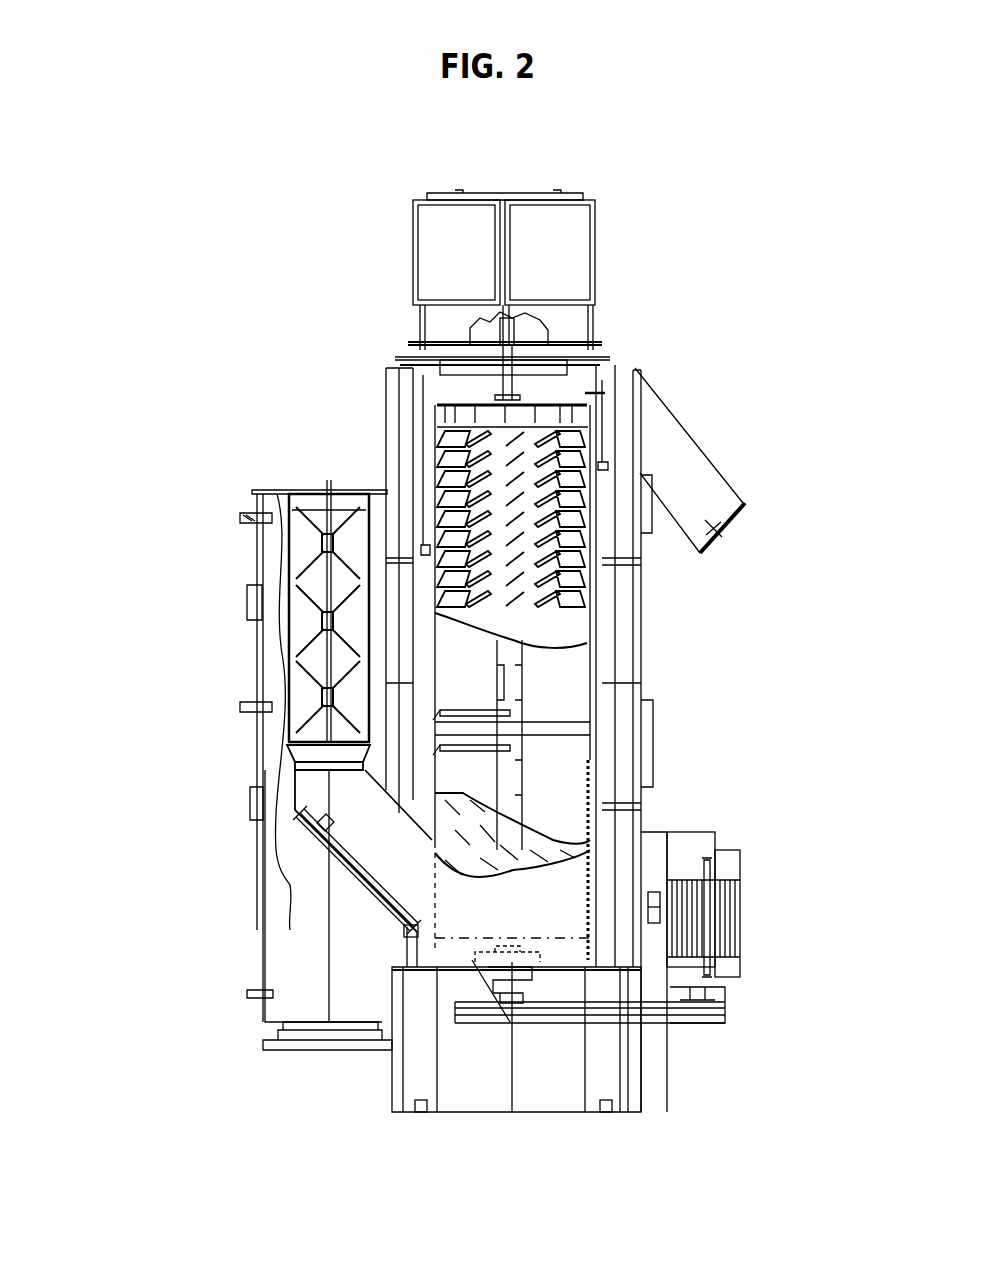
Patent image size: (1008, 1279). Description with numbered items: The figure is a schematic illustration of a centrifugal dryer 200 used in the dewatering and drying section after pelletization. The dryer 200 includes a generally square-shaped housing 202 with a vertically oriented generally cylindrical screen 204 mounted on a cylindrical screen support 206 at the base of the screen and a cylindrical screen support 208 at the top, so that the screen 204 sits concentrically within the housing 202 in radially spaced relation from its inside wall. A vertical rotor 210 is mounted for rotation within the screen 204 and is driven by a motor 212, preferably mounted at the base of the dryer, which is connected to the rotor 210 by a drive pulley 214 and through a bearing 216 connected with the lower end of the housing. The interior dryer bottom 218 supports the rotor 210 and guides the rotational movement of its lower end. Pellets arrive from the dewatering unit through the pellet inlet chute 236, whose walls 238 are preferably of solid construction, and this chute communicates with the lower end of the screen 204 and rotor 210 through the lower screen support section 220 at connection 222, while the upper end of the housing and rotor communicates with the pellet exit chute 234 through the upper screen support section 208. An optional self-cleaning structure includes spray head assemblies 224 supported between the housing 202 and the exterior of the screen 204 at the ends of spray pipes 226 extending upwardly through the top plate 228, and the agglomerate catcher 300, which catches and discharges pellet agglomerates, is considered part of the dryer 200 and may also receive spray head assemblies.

The centrifugal dryer 200 is at (180, 185).
The housing 202 is at (390, 392).
The cylindrical screen 204 is at (578, 668).
The cylindrical screen support 206 is at (567, 842).
The cylindrical screen support 208 is at (635, 370).
The vertical rotor 210 is at (537, 334).
The motor 212 is at (728, 865).
The drive pulley 214 is at (715, 1008).
The bearing 216 is at (537, 965).
The interior dryer bottom 218 is at (470, 952).
The lower screen support section 220 is at (473, 963).
The connection 222 is at (433, 843).
The spray head assembly 224 is at (580, 470).
The spray pipe 226 is at (597, 424).
The top plate 228 is at (397, 363).
The pellet exit chute 234 is at (713, 527).
The pellet inlet chute 236 is at (380, 868).
The walls 238 is at (373, 858).
The agglomerate catcher 300 is at (310, 490).